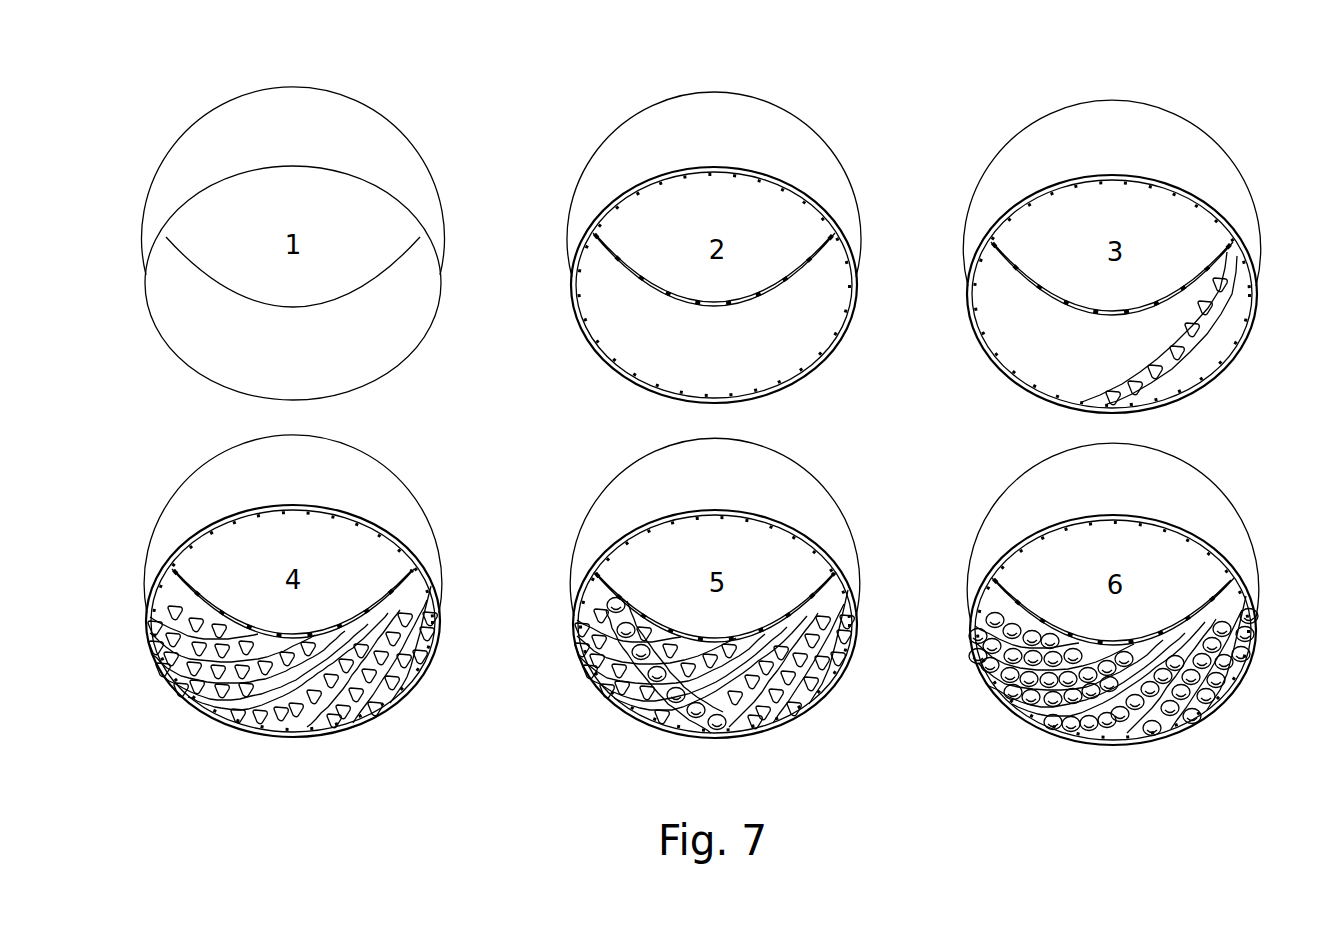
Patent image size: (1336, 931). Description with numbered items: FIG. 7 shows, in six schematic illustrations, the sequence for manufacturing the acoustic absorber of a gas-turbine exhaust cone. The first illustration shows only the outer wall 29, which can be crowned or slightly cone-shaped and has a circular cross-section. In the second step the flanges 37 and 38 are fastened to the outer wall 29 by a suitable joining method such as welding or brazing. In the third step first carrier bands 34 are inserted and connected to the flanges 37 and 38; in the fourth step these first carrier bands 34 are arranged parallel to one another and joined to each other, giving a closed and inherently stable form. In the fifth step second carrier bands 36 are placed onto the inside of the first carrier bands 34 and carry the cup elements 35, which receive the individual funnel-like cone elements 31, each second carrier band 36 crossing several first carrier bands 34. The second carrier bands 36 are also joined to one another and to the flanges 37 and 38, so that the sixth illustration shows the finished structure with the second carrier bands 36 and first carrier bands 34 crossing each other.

The outer wall 29 is at (381, 130).
The funnel-like cone elements 31 is at (1185, 359).
The first carrier bands 34 is at (1207, 324).
The cup elements 35 is at (662, 713).
The second carrier bands 36 is at (747, 736).
The flange 37 is at (677, 301).
The flange 38 is at (813, 374).